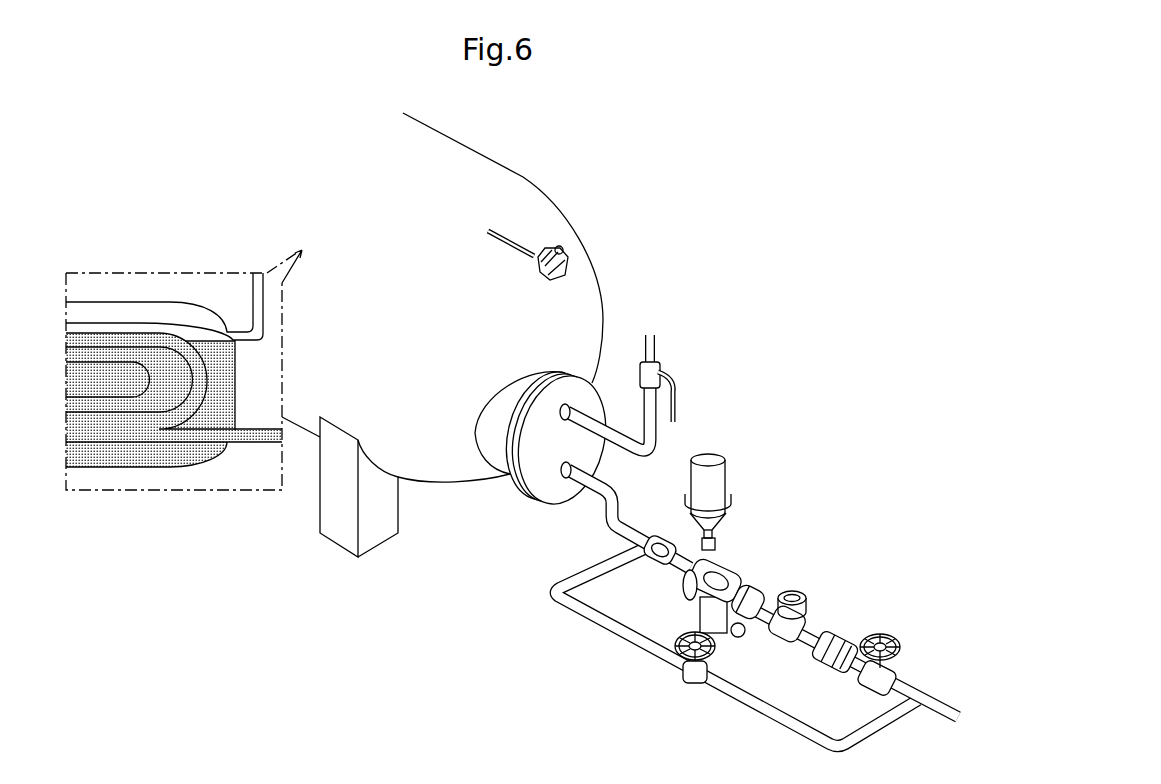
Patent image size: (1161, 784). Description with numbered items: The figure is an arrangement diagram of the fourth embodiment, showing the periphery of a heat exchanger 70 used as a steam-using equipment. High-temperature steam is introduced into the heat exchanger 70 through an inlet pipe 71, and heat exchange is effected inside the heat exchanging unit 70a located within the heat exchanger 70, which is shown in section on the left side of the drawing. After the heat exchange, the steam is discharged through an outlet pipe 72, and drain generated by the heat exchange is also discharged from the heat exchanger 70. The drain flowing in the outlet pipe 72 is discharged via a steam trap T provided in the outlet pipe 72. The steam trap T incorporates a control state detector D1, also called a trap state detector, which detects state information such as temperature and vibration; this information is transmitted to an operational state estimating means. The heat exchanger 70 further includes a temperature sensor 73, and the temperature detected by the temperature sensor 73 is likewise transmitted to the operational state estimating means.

The heat exchanger 70 is at (487, 160).
The heat exchanging unit 70a is at (90, 320).
The inlet pipe 71 is at (657, 437).
The outlet pipe 72 is at (600, 510).
The temperature sensor 73 is at (552, 243).
The control state detector D1 is at (728, 472).
The steam trap T is at (740, 565).